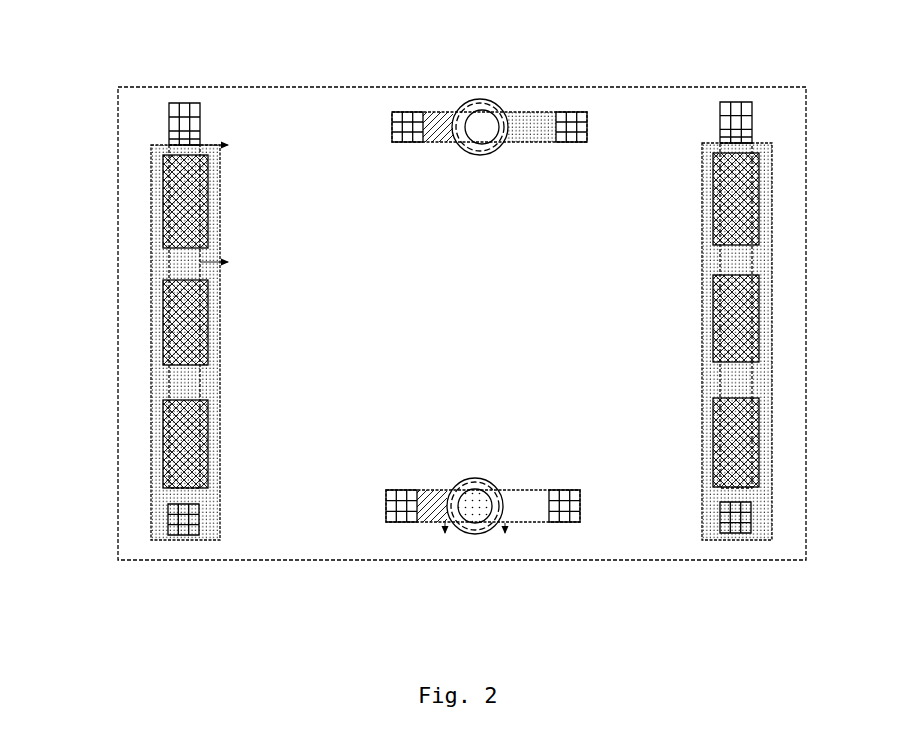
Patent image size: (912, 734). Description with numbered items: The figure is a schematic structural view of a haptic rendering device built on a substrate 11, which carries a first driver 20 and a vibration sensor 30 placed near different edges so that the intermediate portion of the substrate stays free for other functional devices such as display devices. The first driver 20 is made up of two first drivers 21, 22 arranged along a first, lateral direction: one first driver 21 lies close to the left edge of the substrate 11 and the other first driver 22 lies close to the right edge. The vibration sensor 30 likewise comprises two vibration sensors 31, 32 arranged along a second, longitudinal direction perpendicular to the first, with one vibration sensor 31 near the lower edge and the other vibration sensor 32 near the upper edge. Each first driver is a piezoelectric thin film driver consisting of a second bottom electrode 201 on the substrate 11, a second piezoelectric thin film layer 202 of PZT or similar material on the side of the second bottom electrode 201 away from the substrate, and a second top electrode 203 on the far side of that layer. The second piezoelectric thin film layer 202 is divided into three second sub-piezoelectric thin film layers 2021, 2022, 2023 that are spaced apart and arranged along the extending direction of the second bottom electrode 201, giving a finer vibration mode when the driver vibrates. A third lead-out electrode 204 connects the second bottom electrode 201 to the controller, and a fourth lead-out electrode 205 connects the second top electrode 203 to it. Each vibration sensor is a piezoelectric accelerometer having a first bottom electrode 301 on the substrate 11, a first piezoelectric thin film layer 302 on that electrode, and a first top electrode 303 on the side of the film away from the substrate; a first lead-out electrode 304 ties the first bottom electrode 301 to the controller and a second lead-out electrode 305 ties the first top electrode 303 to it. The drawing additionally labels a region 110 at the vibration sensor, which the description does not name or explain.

The substrate 11 is at (125, 120).
The first driver 20 is at (467, 292).
The first driver 21 is at (214, 292).
The first driver 22 is at (779, 256).
The second bottom electrode 201 is at (162, 270).
The second piezoelectric thin film layer 202 is at (283, 321).
The second sub-piezoelectric thin film layer 2021 is at (210, 196).
The second sub-piezoelectric thin film layer 2022 is at (215, 315).
The second sub-piezoelectric thin film layer 2023 is at (222, 430).
The second top electrode 203 is at (152, 371).
The third lead-out electrode 204 is at (155, 512).
The fourth lead-out electrode 205 is at (186, 103).
The vibration sensor 30 is at (483, 340).
The vibration sensor 31 is at (483, 526).
The vibration sensor 32 is at (457, 99).
The through hole 110 is at (472, 478).
The first bottom electrode 301 is at (532, 522).
The first piezoelectric thin film layer 302 is at (496, 488).
The first top electrode 303 is at (440, 521).
The first lead-out electrode 304 is at (585, 520).
The second lead-out electrode 305 is at (390, 515).